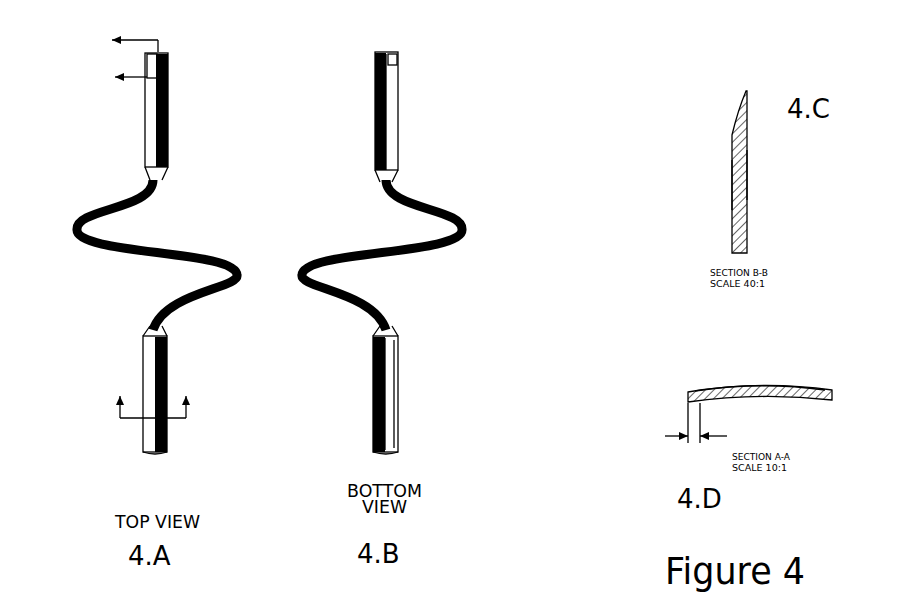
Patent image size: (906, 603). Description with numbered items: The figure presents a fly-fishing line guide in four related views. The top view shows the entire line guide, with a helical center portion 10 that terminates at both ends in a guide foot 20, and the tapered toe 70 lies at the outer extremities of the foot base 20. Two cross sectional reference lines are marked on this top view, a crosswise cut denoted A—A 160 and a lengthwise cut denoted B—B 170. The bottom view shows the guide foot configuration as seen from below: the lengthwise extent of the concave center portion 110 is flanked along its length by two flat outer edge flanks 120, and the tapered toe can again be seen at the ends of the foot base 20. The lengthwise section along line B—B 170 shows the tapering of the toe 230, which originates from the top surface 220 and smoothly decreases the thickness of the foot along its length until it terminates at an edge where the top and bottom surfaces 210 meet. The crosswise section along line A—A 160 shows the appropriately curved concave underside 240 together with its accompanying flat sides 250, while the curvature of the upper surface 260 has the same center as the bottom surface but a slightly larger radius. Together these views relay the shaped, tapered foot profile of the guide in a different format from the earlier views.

The helical center portion 10 is at (350, 257).
The guide foot 20 is at (169, 157).
The toe 70 is at (148, 454).
The concave center portion 110 is at (385, 385).
The flat outer edge flanks 120 is at (373, 446).
The cross sectional reference line A—A 160 is at (124, 395).
The cross sectional reference line B—B 170 is at (94, 59).
The edge where top and bottom surfaces meet 210 is at (749, 174).
The top surface 220 is at (730, 190).
The tapering of the toe 230 is at (735, 105).
The concave underside 240 is at (730, 387).
The flat sides 250 is at (648, 444).
The upper surface 260 is at (708, 385).